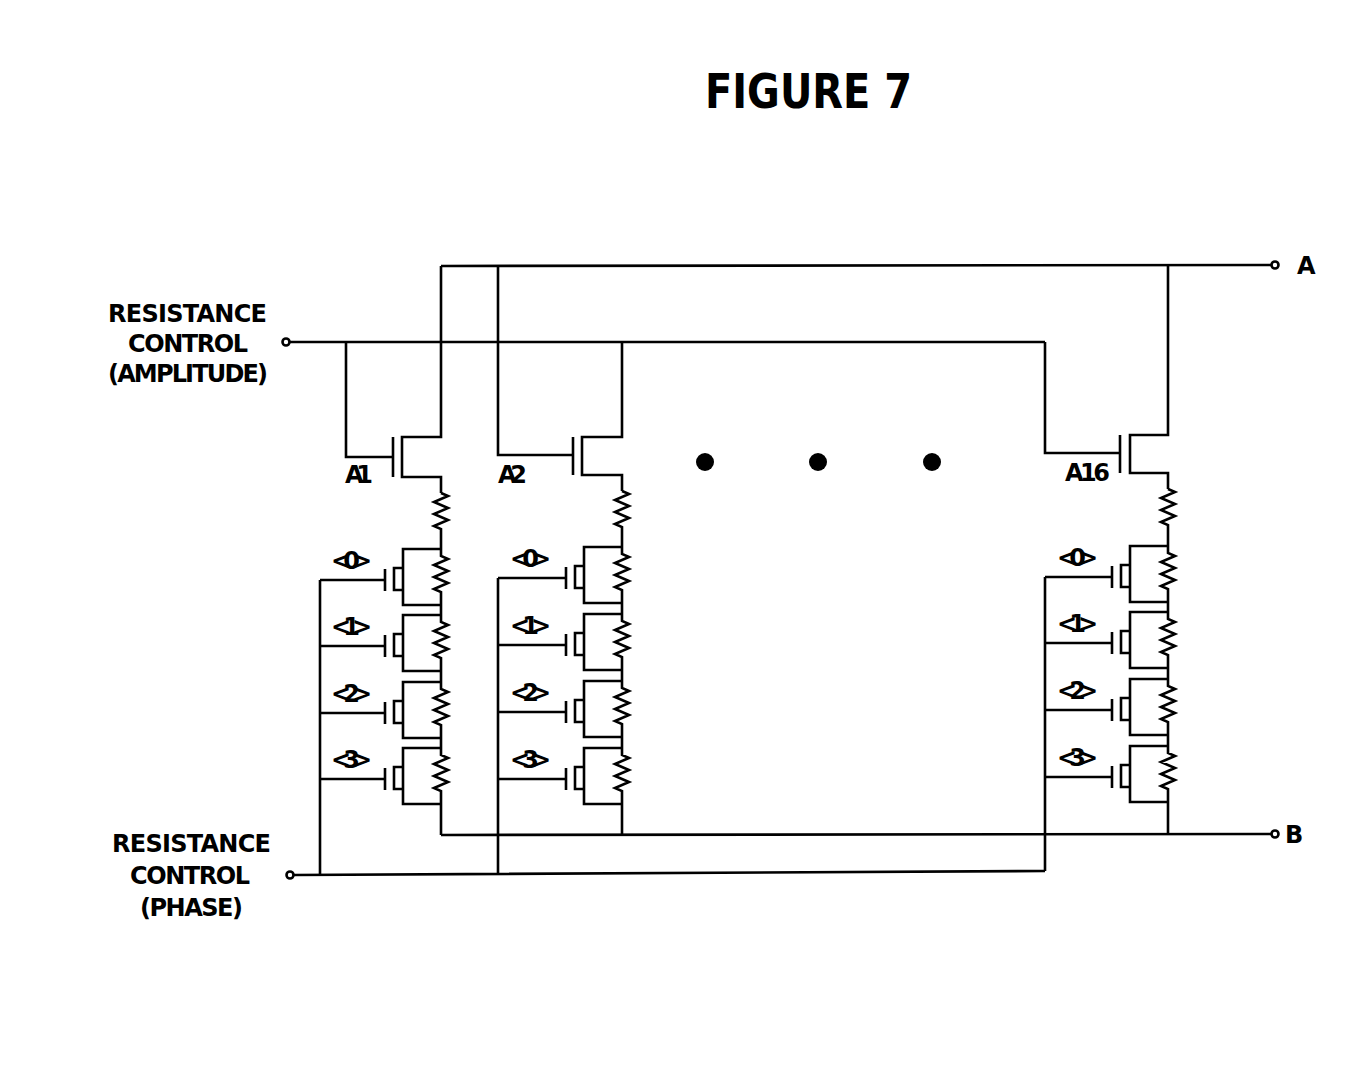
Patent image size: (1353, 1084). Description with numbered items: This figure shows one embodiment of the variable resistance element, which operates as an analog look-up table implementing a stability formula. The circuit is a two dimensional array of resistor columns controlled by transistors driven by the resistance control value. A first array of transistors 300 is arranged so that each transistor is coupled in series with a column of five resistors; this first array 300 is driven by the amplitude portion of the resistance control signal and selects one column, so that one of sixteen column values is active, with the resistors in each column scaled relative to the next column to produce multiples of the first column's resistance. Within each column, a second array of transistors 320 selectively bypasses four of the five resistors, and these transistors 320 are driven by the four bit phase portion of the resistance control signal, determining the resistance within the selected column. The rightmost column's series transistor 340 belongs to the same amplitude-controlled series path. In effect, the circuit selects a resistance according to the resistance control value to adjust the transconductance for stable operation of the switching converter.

The first array of transistors 300 is at (415, 437).
The second array of transistors 320 is at (597, 437).
The transistor (amplitude control, segment A16) 340 is at (1137, 435).